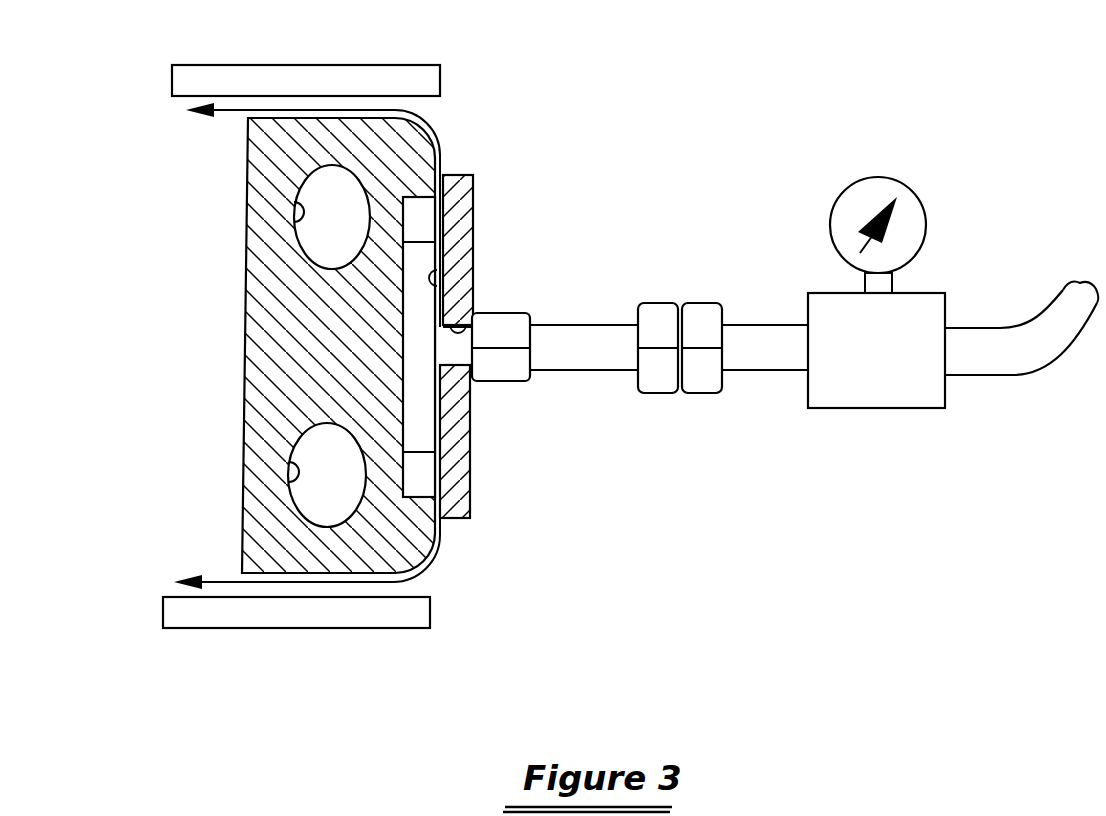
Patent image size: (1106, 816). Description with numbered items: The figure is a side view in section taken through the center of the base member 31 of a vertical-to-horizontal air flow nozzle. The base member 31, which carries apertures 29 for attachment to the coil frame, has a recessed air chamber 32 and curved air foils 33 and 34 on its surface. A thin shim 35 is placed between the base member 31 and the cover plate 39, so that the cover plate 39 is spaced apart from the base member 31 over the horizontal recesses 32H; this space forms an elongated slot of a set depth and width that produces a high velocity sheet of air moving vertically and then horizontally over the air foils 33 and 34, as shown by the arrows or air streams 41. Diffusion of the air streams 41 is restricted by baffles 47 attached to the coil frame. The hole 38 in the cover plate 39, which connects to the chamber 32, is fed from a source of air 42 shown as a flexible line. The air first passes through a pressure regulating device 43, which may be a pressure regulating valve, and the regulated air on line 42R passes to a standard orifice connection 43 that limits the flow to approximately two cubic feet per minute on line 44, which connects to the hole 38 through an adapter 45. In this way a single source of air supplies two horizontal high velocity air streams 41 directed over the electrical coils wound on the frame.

The apertures 29 is at (302, 212).
The base member 31 is at (204, 335).
The recessed air chamber 32 is at (422, 412).
The horizontal recesses 32H is at (422, 213).
The curved air foil 33 is at (442, 147).
The curved air foil 34 is at (422, 560).
The shim 35 is at (433, 268).
The air hole 38 is at (472, 332).
The cover plate 39 is at (462, 213).
The air streams 41 is at (428, 128).
The source of air 42 is at (990, 365).
The regulated air line 42R is at (768, 333).
The pressure regulating device / orifice connection 43 is at (657, 310).
The line 44 is at (590, 372).
The adapter 45 is at (515, 382).
The baffles 47 is at (402, 70).